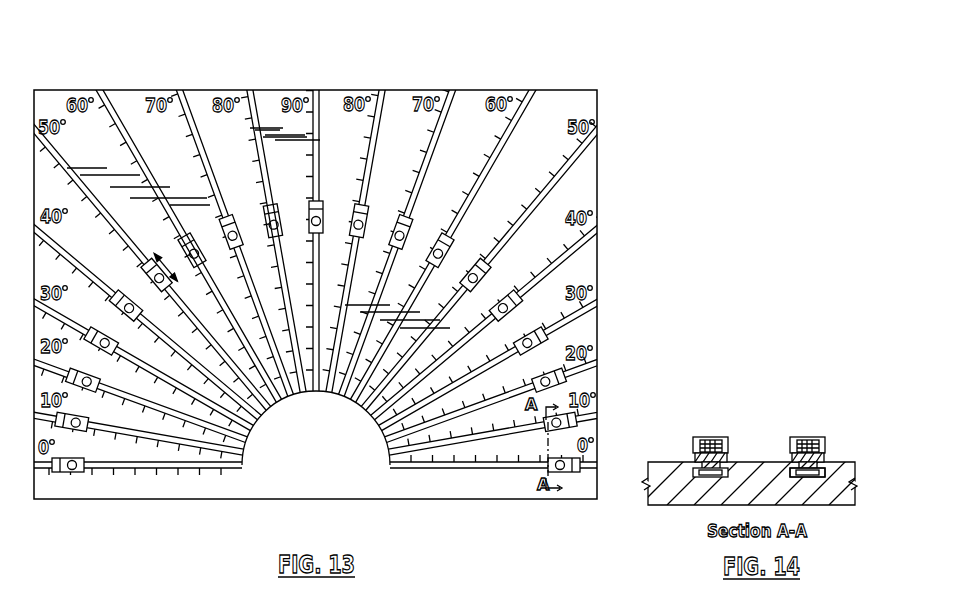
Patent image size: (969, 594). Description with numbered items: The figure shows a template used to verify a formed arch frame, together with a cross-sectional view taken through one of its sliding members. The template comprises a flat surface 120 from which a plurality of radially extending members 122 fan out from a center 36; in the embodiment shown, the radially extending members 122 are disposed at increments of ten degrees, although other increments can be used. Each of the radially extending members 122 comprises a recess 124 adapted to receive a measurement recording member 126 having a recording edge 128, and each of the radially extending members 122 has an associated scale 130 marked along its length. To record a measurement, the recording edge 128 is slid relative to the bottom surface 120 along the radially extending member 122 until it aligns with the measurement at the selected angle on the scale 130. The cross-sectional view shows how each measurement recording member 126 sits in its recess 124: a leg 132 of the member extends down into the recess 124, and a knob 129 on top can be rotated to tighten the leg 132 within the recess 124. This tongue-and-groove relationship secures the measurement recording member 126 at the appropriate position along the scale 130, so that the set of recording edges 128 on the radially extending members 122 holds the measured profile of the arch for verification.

In FIG. 13, the center 36 is at (315, 468).
In FIG. 13, the flat surface 120 is at (552, 107).
In FIG. 13, the radially extending members 122 is at (318, 106).
In FIG. 14, the recesses 124 is at (707, 477).
In FIG. 14, the measurement recording members 126 is at (712, 443).
In FIG. 13, the recording edge 128 is at (452, 242).
In FIG. 14, the knob 129 is at (810, 445).
In FIG. 13, the scale 130 is at (136, 161).
In FIG. 14, the leg 132 is at (822, 472).